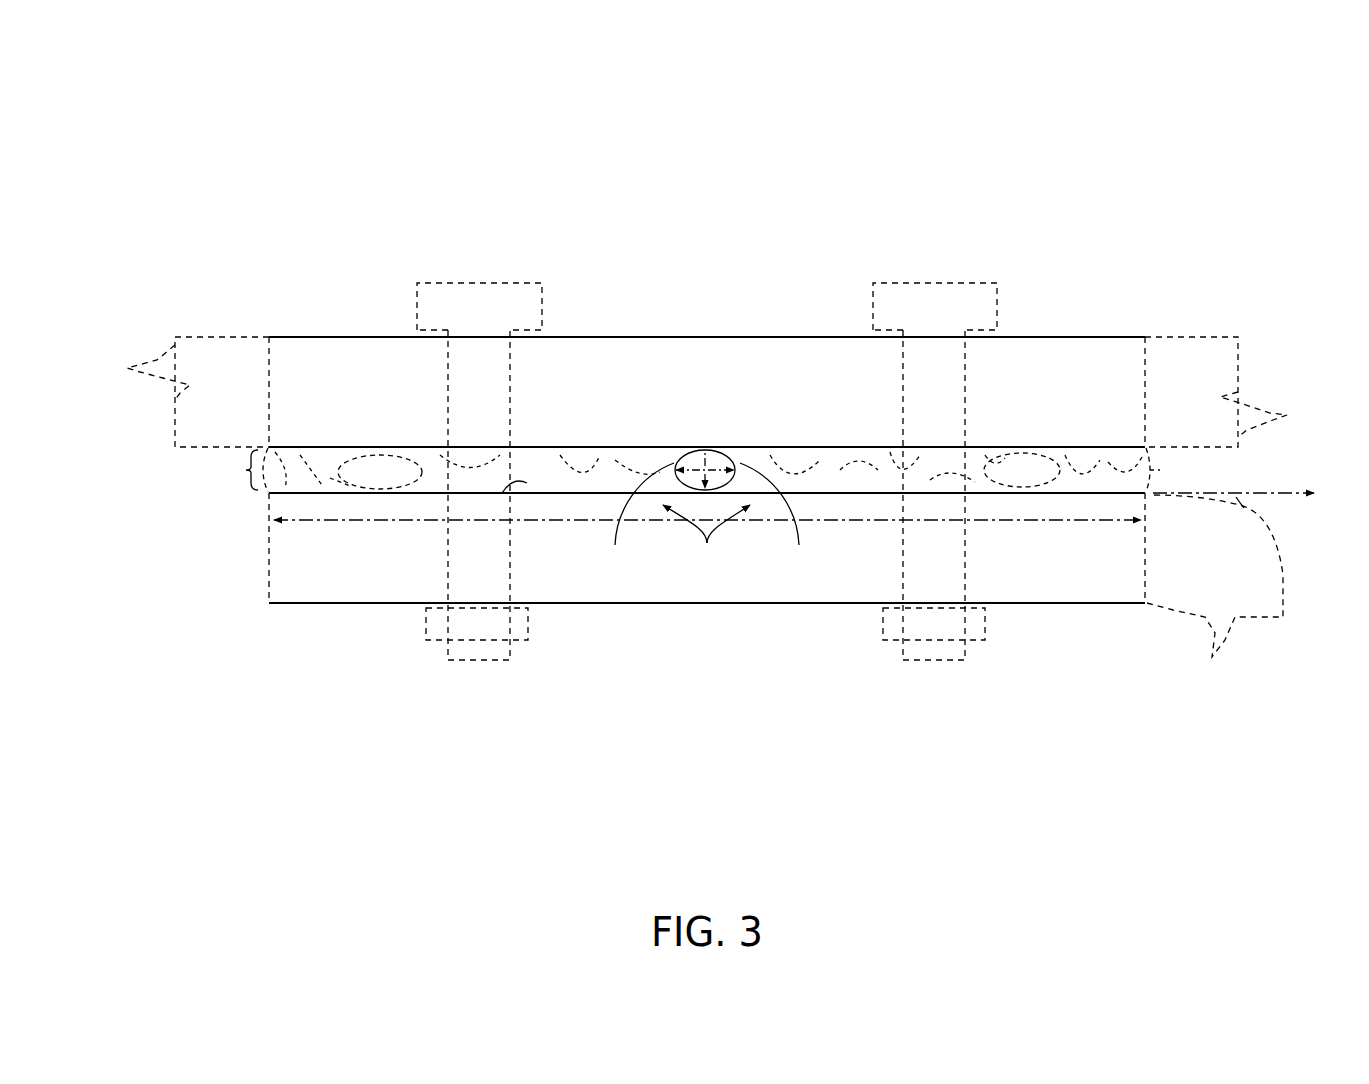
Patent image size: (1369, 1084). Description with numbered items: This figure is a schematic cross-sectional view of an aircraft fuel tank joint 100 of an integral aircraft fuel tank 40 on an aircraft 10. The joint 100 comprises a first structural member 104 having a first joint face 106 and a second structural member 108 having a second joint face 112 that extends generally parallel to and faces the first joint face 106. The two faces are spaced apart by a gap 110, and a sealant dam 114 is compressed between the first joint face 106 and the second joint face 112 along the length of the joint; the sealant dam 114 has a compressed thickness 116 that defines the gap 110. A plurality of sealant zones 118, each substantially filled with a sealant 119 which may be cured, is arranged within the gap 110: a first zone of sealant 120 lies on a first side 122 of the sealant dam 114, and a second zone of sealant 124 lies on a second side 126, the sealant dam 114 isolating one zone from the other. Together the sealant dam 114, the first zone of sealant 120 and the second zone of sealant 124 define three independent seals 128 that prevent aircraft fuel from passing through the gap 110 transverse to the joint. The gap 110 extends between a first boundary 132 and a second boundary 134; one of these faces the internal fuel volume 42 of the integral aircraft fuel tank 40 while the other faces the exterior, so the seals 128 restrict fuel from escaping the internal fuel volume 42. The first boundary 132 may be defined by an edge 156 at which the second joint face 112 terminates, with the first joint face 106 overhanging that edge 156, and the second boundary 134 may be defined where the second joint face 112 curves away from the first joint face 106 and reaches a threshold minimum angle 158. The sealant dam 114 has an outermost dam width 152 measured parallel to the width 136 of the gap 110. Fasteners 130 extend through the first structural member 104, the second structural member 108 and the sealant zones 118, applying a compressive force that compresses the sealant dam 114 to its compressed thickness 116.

The vehicle 10 is at (1170, 95).
The integral aircraft fuel tank 40 is at (1158, 130).
The internal fuel volume 42 is at (108, 500).
The aircraft fuel tank joint 100 is at (1147, 170).
The first structural member 104 is at (222, 333).
The first joint face 106 is at (335, 447).
The second structural member 108 is at (355, 605).
The gap 110 is at (248, 470).
The second joint face 112 is at (527, 483).
The sealant dam 114 is at (725, 450).
The compressed thickness 116 is at (683, 458).
The sealant zones 118 is at (706, 541).
The sealant 119 is at (580, 480).
The first zone of sealant 120 is at (292, 470).
The first side 122 is at (635, 520).
The second zone of sealant 124 is at (868, 457).
The second side 126 is at (781, 520).
The independent seals 128 is at (678, 428).
The fasteners 130 is at (480, 283).
The first boundary 132 is at (225, 468).
The second boundary 134 is at (1233, 470).
The width 136 is at (1050, 520).
The outermost dam width 152 is at (728, 445).
The edge 156 is at (1150, 447).
The threshold minimum angle 158 is at (1245, 508).